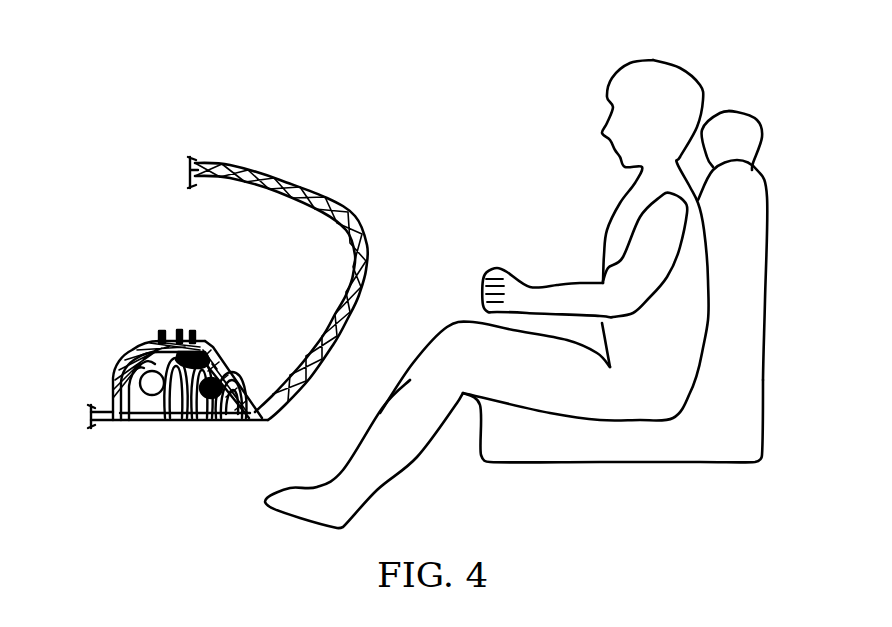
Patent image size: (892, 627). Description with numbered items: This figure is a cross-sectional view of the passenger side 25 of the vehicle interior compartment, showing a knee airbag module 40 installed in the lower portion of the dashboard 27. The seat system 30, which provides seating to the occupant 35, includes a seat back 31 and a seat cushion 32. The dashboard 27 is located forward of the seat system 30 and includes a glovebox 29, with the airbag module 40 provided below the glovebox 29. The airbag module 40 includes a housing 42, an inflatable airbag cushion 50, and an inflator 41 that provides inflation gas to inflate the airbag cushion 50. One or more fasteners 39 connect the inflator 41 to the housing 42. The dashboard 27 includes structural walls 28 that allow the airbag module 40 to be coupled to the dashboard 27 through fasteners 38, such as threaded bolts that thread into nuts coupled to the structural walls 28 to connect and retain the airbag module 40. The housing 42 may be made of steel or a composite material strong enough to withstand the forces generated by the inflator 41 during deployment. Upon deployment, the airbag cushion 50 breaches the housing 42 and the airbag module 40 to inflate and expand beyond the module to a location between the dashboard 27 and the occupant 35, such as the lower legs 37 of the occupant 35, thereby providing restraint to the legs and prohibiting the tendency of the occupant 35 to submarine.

The passenger side 25 is at (318, 69).
The dashboard 27 is at (384, 228).
The structural walls 28 is at (180, 327).
The glovebox 29 is at (298, 273).
The seat system 30 is at (650, 306).
The seat back 31 is at (755, 292).
The seat cushion 32 is at (600, 452).
The occupant 35 is at (643, 77).
The lower legs 37 is at (383, 402).
The fastener 38 is at (162, 332).
The fastener 39 is at (128, 350).
The airbag module 40 is at (156, 364).
The inflator 41 is at (143, 394).
The housing 42 is at (113, 392).
The airbag cushion 50 is at (237, 382).